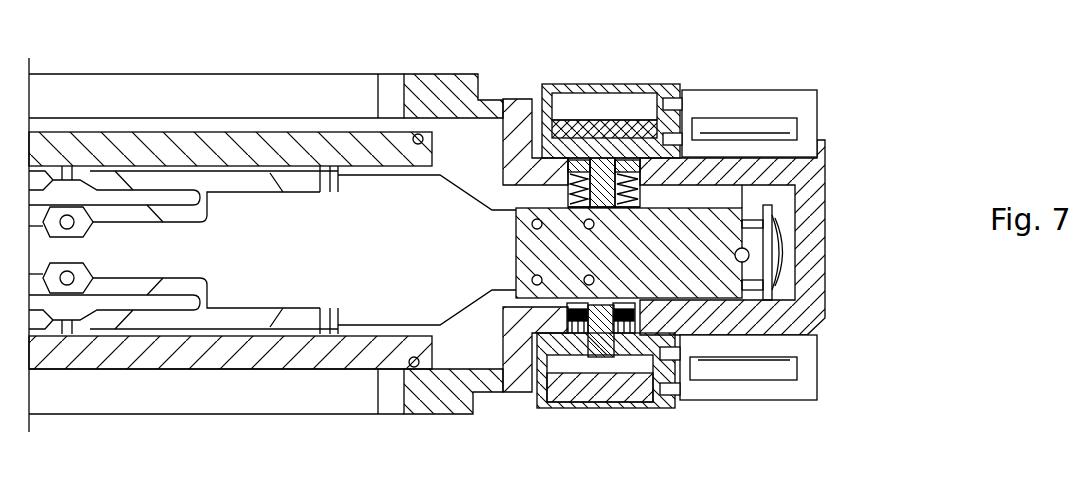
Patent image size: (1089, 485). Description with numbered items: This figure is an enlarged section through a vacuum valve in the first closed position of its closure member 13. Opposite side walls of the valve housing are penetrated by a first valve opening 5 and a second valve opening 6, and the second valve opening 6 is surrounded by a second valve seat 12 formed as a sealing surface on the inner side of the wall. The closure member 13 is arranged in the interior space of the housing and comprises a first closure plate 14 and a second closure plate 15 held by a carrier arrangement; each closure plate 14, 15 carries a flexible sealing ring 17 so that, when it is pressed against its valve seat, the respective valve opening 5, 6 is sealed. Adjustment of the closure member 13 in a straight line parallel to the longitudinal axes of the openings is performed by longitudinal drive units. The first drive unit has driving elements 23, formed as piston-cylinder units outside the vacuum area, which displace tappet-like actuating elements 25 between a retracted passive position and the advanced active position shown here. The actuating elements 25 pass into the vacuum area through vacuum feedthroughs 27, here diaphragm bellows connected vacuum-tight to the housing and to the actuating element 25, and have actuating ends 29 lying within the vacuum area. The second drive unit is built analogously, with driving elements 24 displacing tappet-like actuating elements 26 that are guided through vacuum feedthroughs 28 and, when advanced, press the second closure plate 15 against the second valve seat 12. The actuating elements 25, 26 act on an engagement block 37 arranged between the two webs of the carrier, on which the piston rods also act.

The first valve opening 5 is at (157, 397).
The second valve opening 6 is at (290, 90).
The second valve seat 12 is at (408, 132).
The closure member 13 is at (457, 141).
The first closure plate 14 is at (143, 362).
The second closure plate 15 is at (308, 152).
The flexible sealing ring 17 is at (421, 136).
The driving element 23 is at (666, 410).
The driving element 24 is at (656, 92).
The tappet-like actuating element 25 is at (538, 396).
The tappet-like actuating element 26 is at (612, 195).
The vacuum feedthrough 27 is at (634, 315).
The vacuum feedthrough 28 is at (648, 197).
The actuating end 29 is at (617, 298).
The engagement block 37 is at (688, 230).